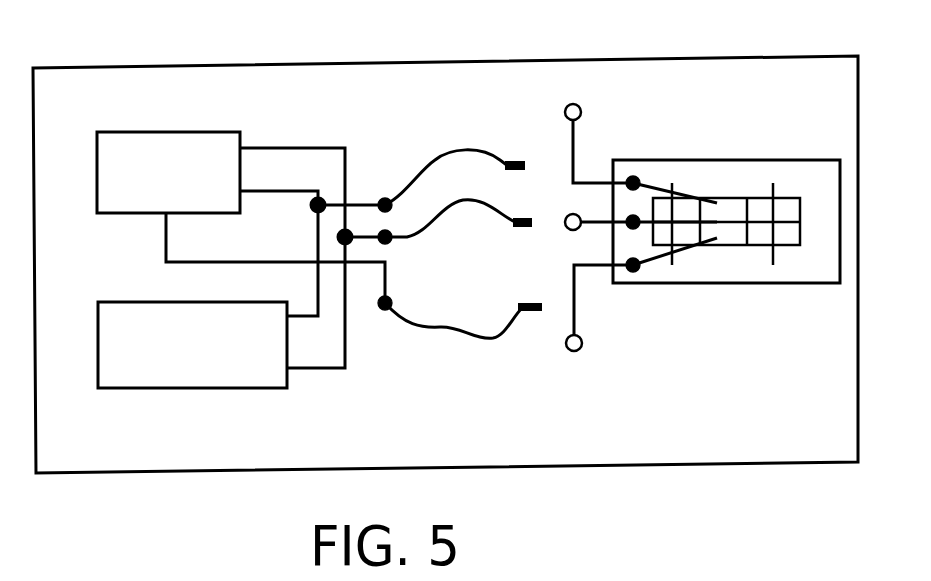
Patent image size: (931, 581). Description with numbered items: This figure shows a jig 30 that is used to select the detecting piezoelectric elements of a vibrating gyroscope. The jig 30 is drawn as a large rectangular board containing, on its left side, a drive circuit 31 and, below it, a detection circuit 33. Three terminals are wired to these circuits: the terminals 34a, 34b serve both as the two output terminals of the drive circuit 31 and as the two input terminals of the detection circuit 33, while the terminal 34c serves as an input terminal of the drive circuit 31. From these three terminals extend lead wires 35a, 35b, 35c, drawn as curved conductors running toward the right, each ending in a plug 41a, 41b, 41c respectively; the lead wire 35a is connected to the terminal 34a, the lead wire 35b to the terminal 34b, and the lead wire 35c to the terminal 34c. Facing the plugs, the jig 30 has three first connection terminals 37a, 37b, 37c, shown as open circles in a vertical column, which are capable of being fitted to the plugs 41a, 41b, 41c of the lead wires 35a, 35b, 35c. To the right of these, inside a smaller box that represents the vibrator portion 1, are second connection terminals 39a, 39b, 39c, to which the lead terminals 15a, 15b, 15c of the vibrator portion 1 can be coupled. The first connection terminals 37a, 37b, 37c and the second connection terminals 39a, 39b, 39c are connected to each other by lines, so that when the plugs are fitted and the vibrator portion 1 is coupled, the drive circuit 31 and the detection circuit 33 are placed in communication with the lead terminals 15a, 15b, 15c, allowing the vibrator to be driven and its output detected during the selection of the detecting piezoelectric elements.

The vibrator portion 1 is at (820, 148).
The lead terminal 15a is at (625, 183).
The lead terminal 15b is at (640, 197).
The lead terminal 15c is at (640, 270).
The jig 30 is at (338, 40).
The drive circuit 31 is at (133, 131).
The detection circuit 33 is at (188, 390).
The terminal 34a is at (383, 198).
The terminal 34b is at (376, 247).
The terminal 34c is at (383, 313).
The lead wire 35a is at (432, 162).
The lead wire 35b is at (410, 242).
The lead wire 35c is at (458, 338).
The first connection terminal 37a is at (573, 103).
The first connection terminal 37b is at (576, 231).
The first connection terminal 37c is at (574, 352).
The second connection terminal 39a is at (620, 181).
The second connection terminal 39b is at (626, 220).
The second connection terminal 39c is at (632, 271).
The plug 41a is at (515, 160).
The plug 41b is at (520, 228).
The plug 41c is at (525, 318).